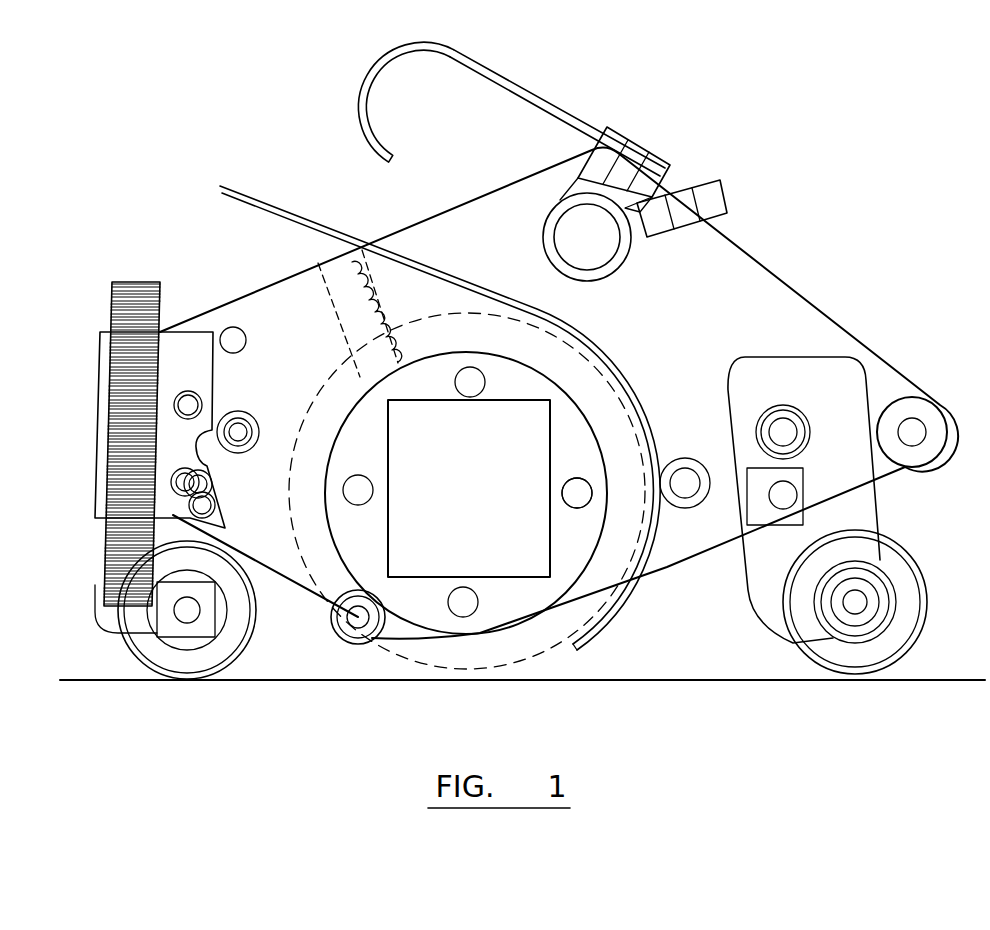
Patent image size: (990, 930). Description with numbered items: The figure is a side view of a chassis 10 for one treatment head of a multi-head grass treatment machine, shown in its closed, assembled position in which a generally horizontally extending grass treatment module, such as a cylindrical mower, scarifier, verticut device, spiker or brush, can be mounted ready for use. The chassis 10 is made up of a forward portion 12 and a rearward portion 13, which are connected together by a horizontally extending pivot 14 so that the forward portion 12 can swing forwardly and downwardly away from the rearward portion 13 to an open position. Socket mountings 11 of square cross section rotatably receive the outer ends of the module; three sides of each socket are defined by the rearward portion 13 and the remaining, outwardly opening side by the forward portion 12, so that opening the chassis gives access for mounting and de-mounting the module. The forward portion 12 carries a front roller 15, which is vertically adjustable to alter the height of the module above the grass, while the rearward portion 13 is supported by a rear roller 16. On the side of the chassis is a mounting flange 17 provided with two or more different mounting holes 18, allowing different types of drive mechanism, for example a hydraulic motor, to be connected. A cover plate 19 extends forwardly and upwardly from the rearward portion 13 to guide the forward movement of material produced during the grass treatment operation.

The chassis 10 is at (822, 297).
The socket mountings 11 is at (570, 565).
The forward portion 12 is at (267, 312).
The rearward portion 13 is at (745, 287).
The pivot 14 is at (345, 632).
The front roller 15 is at (187, 673).
The rear roller 16 is at (875, 645).
The mounting flange 17 is at (512, 545).
The mounting holes 18 is at (581, 490).
The cover plate 19 is at (273, 193).